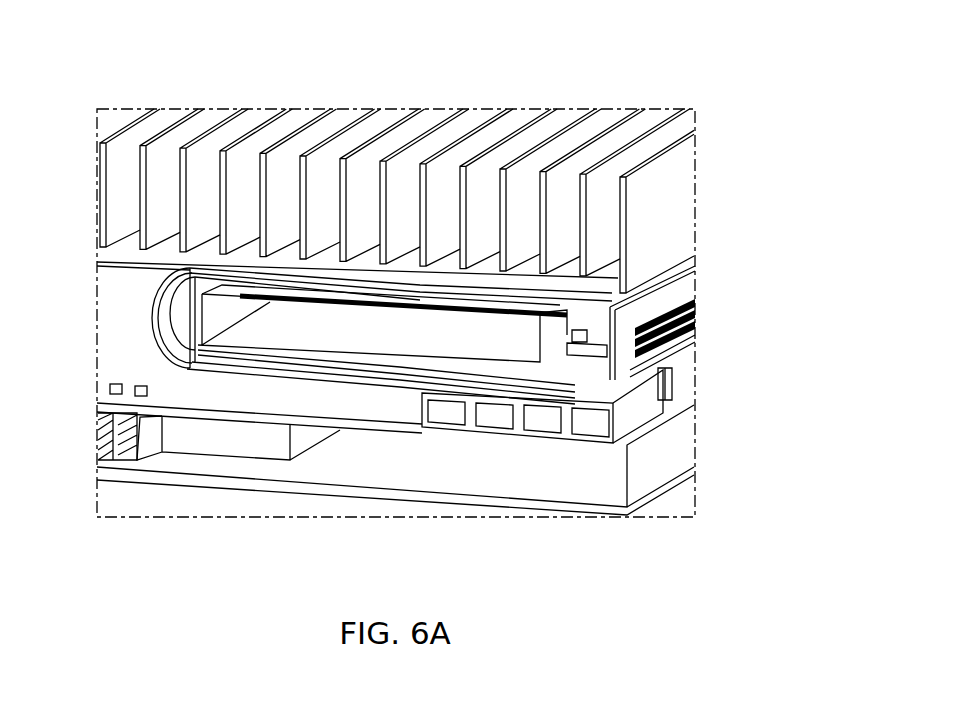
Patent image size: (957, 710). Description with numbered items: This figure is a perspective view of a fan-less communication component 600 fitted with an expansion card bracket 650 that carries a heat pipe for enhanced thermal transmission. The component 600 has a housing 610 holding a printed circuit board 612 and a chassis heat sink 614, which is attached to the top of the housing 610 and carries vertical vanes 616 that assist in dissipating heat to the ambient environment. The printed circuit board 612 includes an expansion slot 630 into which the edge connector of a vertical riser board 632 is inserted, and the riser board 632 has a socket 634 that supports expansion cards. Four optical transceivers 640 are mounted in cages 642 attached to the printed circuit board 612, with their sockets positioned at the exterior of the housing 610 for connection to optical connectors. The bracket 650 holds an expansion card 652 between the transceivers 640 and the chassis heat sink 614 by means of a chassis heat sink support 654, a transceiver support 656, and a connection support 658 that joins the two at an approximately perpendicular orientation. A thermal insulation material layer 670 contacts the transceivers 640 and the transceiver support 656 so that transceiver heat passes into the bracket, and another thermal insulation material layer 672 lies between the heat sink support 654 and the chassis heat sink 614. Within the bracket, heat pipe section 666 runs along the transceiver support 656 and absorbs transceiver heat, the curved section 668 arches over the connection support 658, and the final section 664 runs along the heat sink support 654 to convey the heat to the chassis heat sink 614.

The fan-less communication component 600 is at (129, 94).
The housing 610 is at (668, 453).
The printed circuit board 612 is at (128, 370).
The chassis heat sink 614 is at (672, 238).
The vertical vanes 616 is at (630, 156).
The expansion slot 630 is at (695, 370).
The vertical riser board 632 is at (688, 332).
The socket 634 is at (630, 362).
The optical transceivers 640 is at (540, 440).
The cages 642 is at (630, 417).
The expansion card bracket 650 is at (193, 367).
The expansion card 652 is at (687, 378).
The chassis heat sink support 654 is at (545, 287).
The transceiver support 656 is at (330, 370).
The connection support 658 is at (153, 318).
The heat pipe section 664 is at (410, 307).
The heat pipe section 666 is at (233, 370).
The curved heat pipe section 668 is at (150, 333).
The thermal insulation material layer 670 is at (483, 400).
The thermal insulation material layer 672 is at (200, 258).